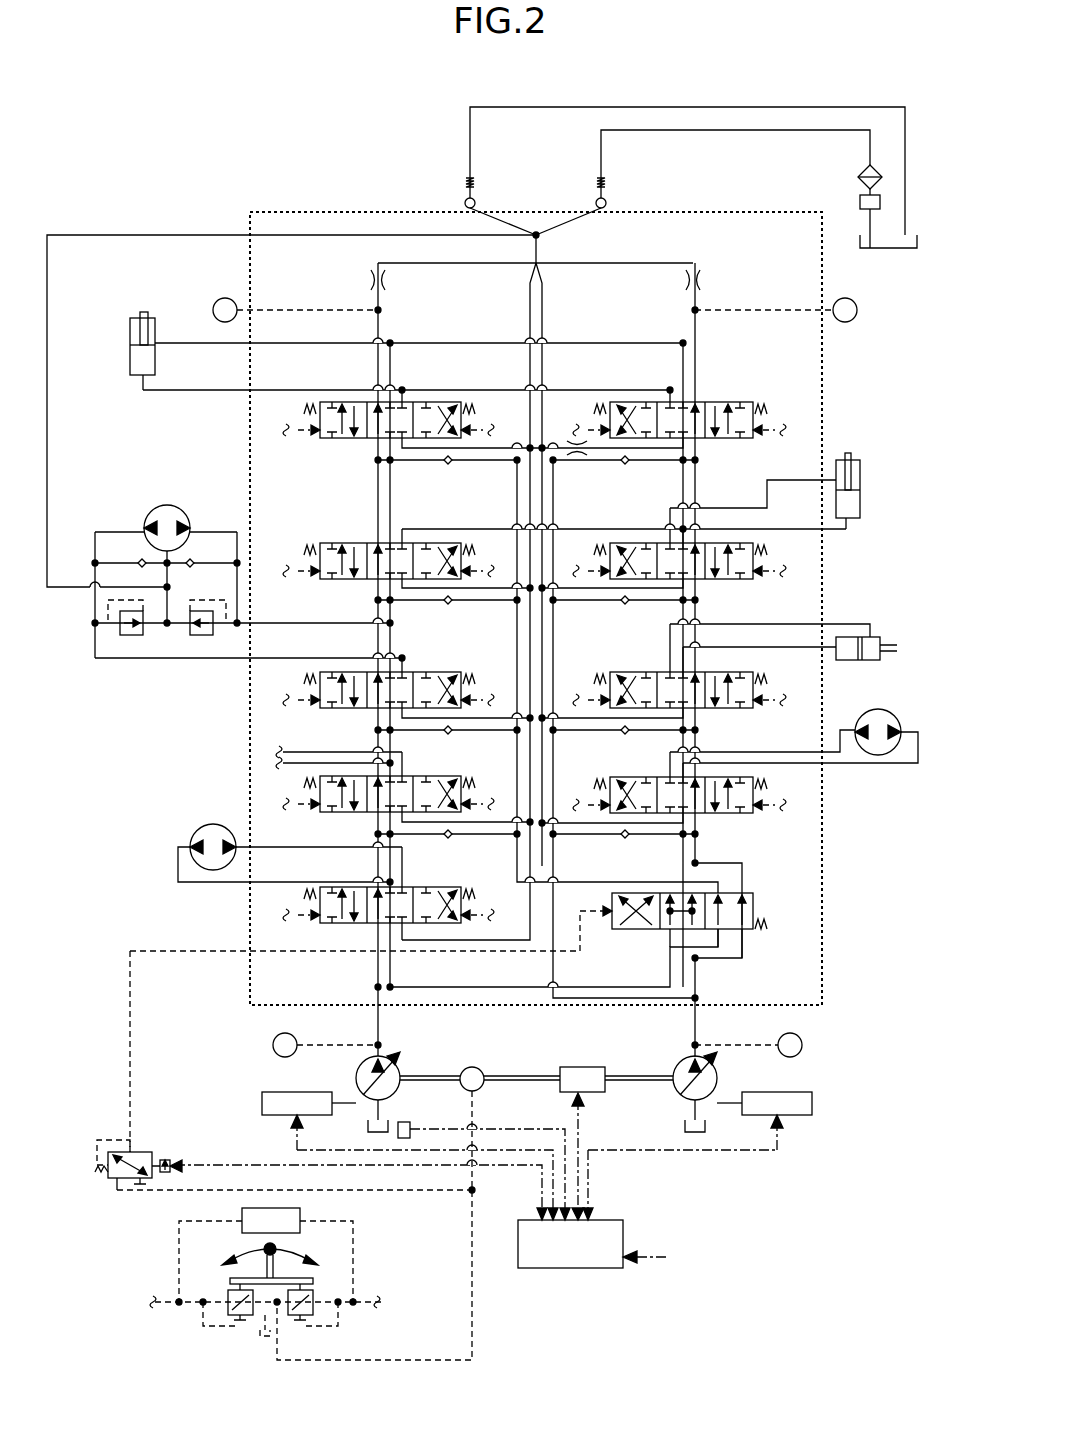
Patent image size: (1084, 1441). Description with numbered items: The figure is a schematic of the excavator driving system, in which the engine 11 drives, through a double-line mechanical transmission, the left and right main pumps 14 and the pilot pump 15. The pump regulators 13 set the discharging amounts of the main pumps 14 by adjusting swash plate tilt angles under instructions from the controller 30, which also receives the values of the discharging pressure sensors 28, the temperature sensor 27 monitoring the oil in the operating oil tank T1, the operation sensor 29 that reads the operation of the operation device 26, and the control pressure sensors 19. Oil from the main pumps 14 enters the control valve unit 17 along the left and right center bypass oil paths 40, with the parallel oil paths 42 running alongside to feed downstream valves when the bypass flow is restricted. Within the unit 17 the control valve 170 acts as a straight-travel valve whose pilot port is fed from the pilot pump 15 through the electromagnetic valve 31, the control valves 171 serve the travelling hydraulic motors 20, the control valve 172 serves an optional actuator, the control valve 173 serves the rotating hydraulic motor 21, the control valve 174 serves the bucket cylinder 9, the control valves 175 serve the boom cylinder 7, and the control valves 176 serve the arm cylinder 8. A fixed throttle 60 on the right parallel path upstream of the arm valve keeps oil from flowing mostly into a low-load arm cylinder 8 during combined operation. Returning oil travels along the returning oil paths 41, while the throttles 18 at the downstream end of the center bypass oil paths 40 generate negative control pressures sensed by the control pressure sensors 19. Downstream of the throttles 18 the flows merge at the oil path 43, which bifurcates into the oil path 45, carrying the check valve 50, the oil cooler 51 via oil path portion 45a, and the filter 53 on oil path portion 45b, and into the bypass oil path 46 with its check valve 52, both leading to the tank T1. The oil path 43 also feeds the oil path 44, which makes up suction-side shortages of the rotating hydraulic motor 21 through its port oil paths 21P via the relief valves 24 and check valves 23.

The boom cylinder 7 is at (863, 509).
The arm cylinder 8 is at (127, 368).
The bucket cylinder 9 is at (882, 637).
The engine 11 is at (610, 1075).
The pump regulators 13 is at (262, 1099).
The main pumps 14 is at (355, 1086).
The pilot pump 15 is at (484, 1075).
The control valve unit 17 is at (352, 212).
The throttles 18 is at (368, 281).
The control pressure sensors 19 is at (845, 342).
The travelling hydraulic motors 20 is at (191, 841).
The rotating hydraulic motor 21 is at (167, 504).
The oil paths 21P is at (143, 514).
The check valves 23 is at (140, 560).
The relief valves 24 is at (132, 640).
The operation device 26 is at (183, 1340).
The temperature sensor 27 is at (407, 1122).
The discharging pressure sensors 28 is at (272, 1049).
The operation sensor 29 is at (302, 1214).
The controller 30 is at (518, 1222).
The electromagnetic valve 31 is at (154, 1161).
The center bypass oil paths 40 is at (369, 986).
The returning oil paths 41 is at (568, 303).
The parallel oil paths 42 is at (509, 872).
The oil path 43 is at (546, 240).
The oil path 44 is at (162, 235).
The oil path 45 is at (780, 178).
The oil path portion 45a is at (808, 130).
The oil path portion 45b is at (860, 202).
The oil path 46 is at (690, 107).
The check valve 50 is at (610, 210).
The oil cooler 51 is at (862, 173).
The check valve 52 is at (462, 209).
The filter 53 is at (905, 197).
The throttle 60 is at (578, 455).
The control valve 170 is at (758, 920).
The control valves 171 is at (759, 797).
The control valve 172 is at (312, 796).
The control valve 173 is at (312, 695).
The control valve 174 is at (762, 695).
The control valves 175 is at (309, 560).
The control valves 176 is at (306, 430).
The operating oil tank T1 is at (920, 252).